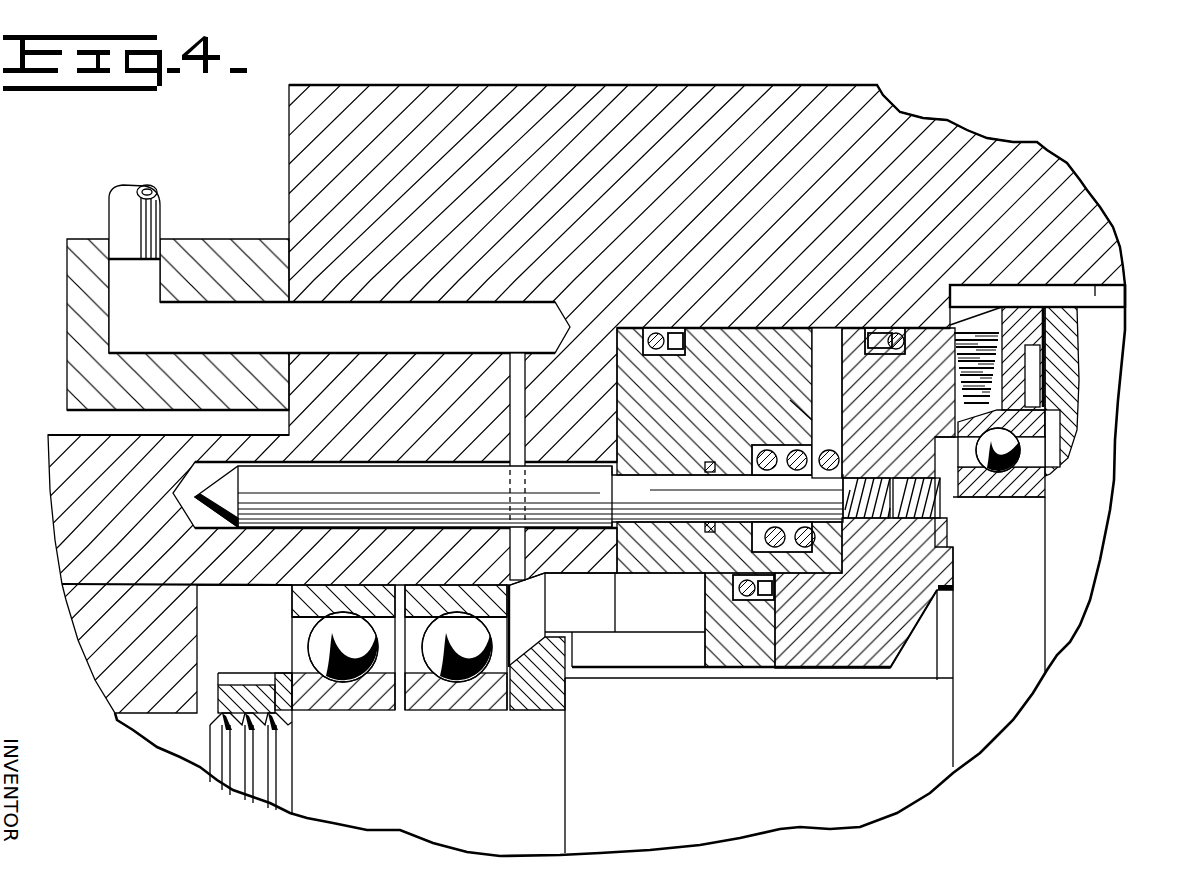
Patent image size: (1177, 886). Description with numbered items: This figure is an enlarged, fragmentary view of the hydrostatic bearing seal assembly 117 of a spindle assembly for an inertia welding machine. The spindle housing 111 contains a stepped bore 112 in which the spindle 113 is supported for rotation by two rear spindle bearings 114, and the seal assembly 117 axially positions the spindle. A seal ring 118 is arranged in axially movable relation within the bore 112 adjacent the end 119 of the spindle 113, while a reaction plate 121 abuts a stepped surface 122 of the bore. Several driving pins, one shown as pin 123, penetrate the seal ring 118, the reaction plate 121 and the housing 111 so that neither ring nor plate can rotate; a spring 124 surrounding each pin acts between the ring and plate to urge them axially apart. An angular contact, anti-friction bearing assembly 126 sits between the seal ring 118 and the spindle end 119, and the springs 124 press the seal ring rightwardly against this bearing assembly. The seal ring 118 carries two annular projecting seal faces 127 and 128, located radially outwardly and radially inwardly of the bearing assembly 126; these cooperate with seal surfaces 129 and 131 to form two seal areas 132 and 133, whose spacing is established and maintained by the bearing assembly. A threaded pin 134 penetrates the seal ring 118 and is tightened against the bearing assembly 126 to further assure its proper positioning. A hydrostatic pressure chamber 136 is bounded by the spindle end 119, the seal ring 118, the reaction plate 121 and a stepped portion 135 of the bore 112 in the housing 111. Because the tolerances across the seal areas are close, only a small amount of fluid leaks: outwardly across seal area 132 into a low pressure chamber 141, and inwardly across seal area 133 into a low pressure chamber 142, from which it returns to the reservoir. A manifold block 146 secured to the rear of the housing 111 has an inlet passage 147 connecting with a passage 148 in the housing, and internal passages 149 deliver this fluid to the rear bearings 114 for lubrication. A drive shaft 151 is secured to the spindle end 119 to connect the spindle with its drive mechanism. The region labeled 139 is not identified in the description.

The spindle housing 111 is at (955, 140).
The stepped bore 112 is at (950, 299).
The spindle 113 is at (1068, 618).
The rear spindle bearings 114 is at (449, 722).
The hydrostatic bearing seal assembly 117 is at (918, 647).
The seal ring 118 is at (836, 665).
The end of the spindle 119 is at (940, 746).
The reaction plate 121 is at (692, 330).
The stepped surface 122 is at (630, 382).
The driving pin 123 is at (455, 465).
The spring 124 is at (772, 446).
The angular contact anti-friction bearing assembly 126 is at (1028, 458).
The seal face 127 is at (1050, 338).
The seal face 128 is at (958, 565).
The seal surface 129 is at (1000, 313).
The seal surface 131 is at (945, 580).
The seal area 132 is at (1043, 297).
The seal area 133 is at (947, 600).
The pin 134 is at (957, 390).
The stepped portion 135 is at (812, 335).
The hydrostatic pressure chamber 136 is at (777, 350).
The chamber 139 is at (828, 432).
The low pressure chamber 141 is at (1095, 295).
The low pressure chamber 142 is at (597, 619).
The manifold block 146 is at (262, 208).
The inlet passage 147 is at (123, 312).
The passage 148 is at (402, 342).
The internal passages 149 is at (517, 362).
The drive shaft 151 is at (494, 805).